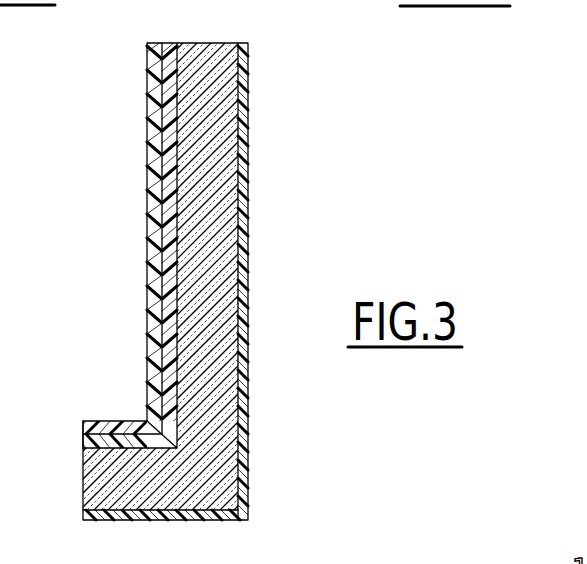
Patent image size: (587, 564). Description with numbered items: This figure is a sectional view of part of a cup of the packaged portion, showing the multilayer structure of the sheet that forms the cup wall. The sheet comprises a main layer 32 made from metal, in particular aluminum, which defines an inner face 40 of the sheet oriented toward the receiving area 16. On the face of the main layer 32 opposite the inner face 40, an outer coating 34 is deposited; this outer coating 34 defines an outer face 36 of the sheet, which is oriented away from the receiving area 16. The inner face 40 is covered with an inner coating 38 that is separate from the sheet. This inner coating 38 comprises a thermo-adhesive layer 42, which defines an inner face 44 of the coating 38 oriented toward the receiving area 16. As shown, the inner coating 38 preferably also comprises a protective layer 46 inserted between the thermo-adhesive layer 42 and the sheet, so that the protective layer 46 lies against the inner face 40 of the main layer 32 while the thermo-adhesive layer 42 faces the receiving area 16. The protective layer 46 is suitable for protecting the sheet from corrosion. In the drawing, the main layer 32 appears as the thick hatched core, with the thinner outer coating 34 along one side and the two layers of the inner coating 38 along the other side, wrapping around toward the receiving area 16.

The receiving area 16 is at (115, 278).
The main layer 32 is at (300, 0).
The outer coating 34 is at (248, 72).
The outer face 36 is at (248, 272).
The inner coating 38 is at (176, 40).
The inner face 40 is at (172, 161).
The thermo-adhesive layer 42 is at (84, 428).
The inner face 44 is at (106, 421).
The protective layer 46 is at (128, 432).